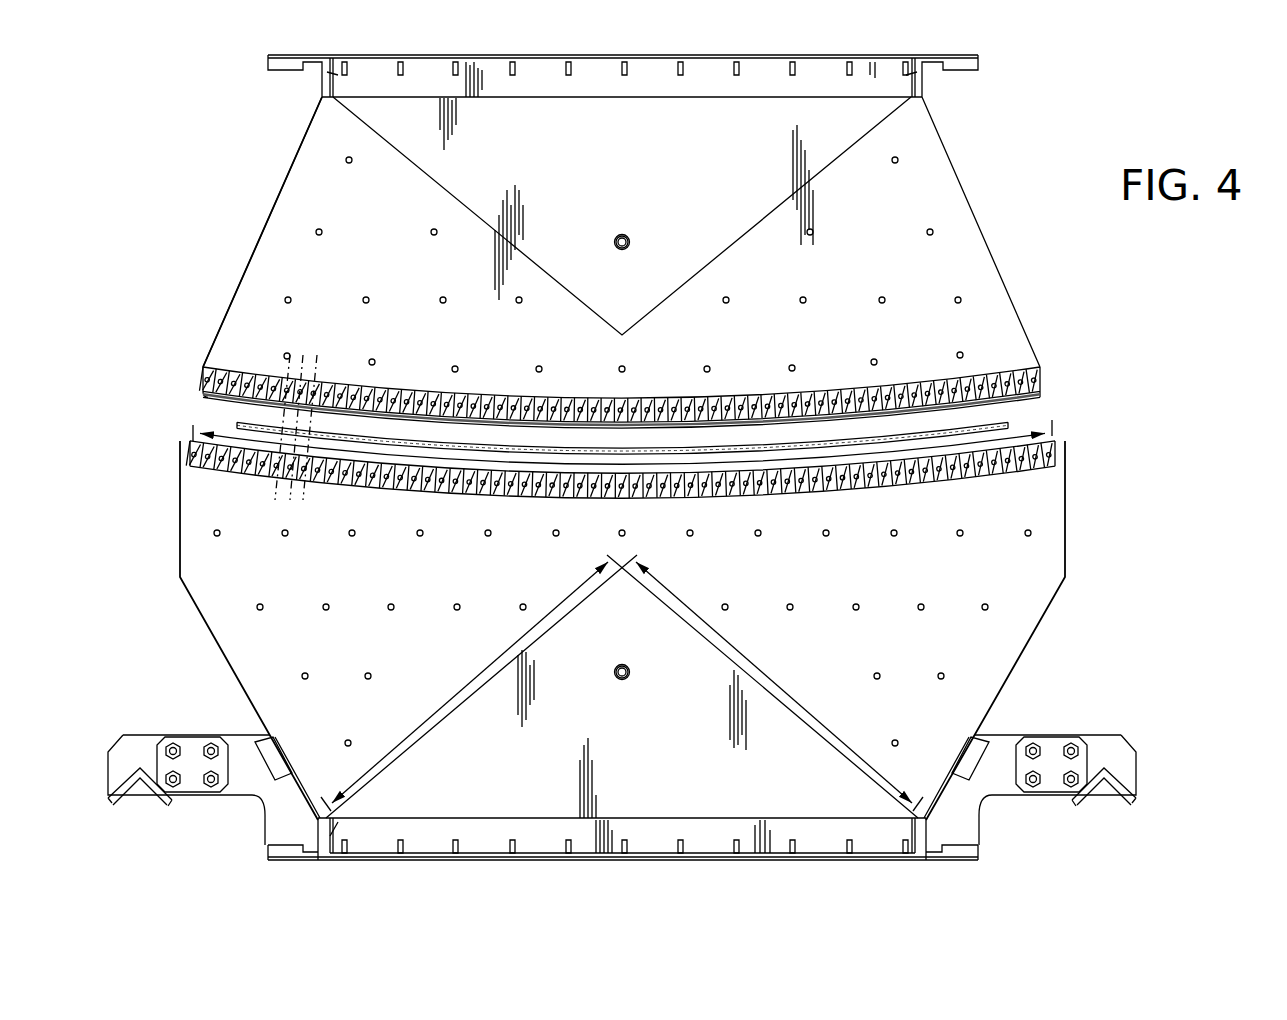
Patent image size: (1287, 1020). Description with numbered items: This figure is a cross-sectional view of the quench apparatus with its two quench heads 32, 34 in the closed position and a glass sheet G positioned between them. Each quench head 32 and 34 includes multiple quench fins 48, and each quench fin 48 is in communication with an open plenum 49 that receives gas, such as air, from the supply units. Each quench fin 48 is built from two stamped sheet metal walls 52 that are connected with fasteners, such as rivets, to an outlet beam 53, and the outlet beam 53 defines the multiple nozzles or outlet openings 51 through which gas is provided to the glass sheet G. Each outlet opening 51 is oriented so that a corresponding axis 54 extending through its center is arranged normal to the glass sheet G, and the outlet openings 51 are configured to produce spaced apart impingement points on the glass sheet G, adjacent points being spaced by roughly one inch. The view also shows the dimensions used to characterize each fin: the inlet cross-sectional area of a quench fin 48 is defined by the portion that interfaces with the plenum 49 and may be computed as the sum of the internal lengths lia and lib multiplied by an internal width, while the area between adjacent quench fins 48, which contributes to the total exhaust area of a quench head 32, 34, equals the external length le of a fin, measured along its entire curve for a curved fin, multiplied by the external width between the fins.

The quench head 32 is at (155, 600).
The quench head 34 is at (232, 134).
The quench fin 48 is at (232, 208).
The plenum 49 is at (636, 192).
The outlet opening 51 is at (1012, 372).
The sheet metal wall 52 is at (264, 292).
The outlet beam 53 is at (400, 388).
The axis 54 is at (327, 372).
The glass sheet G is at (1017, 421).
The external length le is at (629, 466).
The internal length lia is at (464, 686).
The internal length lib is at (779, 686).